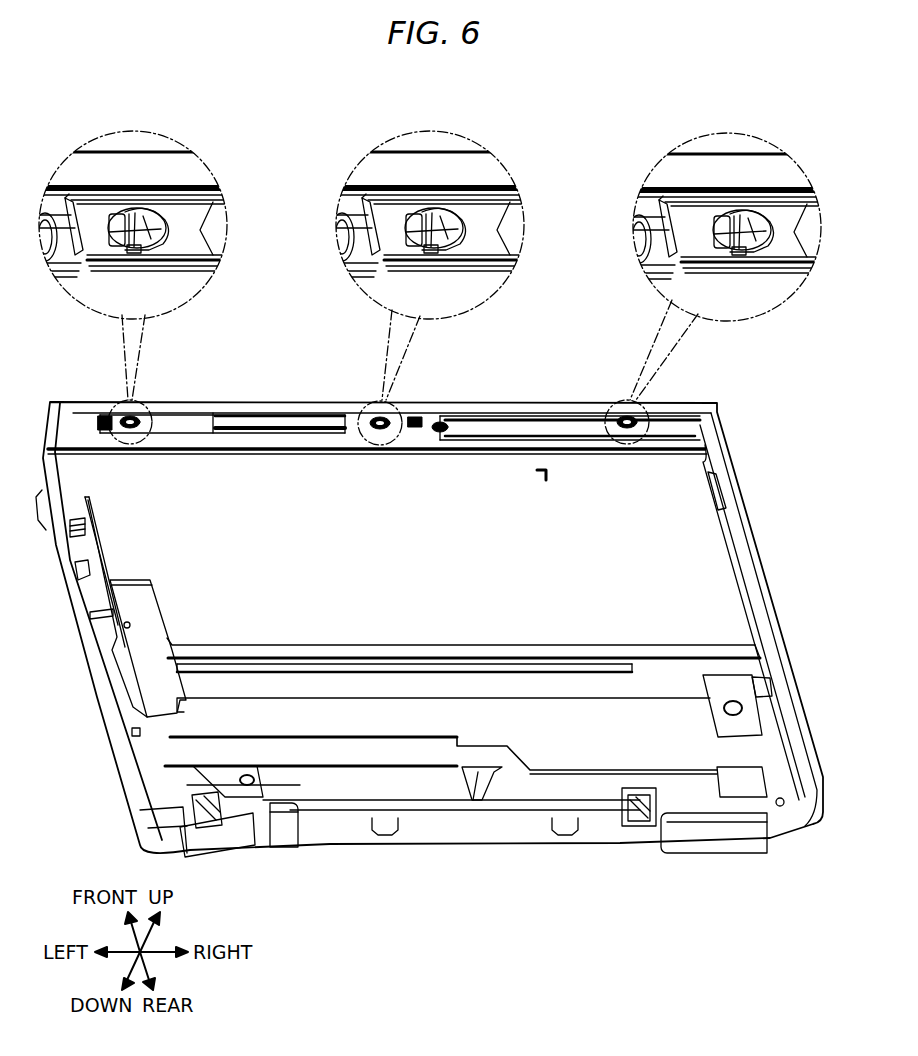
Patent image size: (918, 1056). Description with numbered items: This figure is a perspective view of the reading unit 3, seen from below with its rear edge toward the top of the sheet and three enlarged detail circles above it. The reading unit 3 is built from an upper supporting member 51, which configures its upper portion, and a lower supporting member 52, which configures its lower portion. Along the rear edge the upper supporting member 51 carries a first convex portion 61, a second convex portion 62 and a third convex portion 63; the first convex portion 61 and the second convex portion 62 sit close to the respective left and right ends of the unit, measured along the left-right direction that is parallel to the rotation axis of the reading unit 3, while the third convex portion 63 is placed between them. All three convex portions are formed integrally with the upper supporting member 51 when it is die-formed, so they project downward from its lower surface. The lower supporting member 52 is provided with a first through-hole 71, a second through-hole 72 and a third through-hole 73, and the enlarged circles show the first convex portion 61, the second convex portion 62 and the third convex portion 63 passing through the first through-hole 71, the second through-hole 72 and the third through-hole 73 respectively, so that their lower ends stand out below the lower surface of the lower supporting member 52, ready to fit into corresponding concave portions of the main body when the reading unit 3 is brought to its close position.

The reading unit 3 is at (102, 768).
The upper supporting member 51 is at (202, 169).
The lower supporting member 52 is at (202, 279).
The first convex portion 61 is at (122, 248).
The second convex portion 62 is at (738, 250).
The third convex portion 63 is at (423, 248).
The first through-hole 71 is at (150, 244).
The second through-hole 72 is at (743, 224).
The third through-hole 73 is at (450, 246).